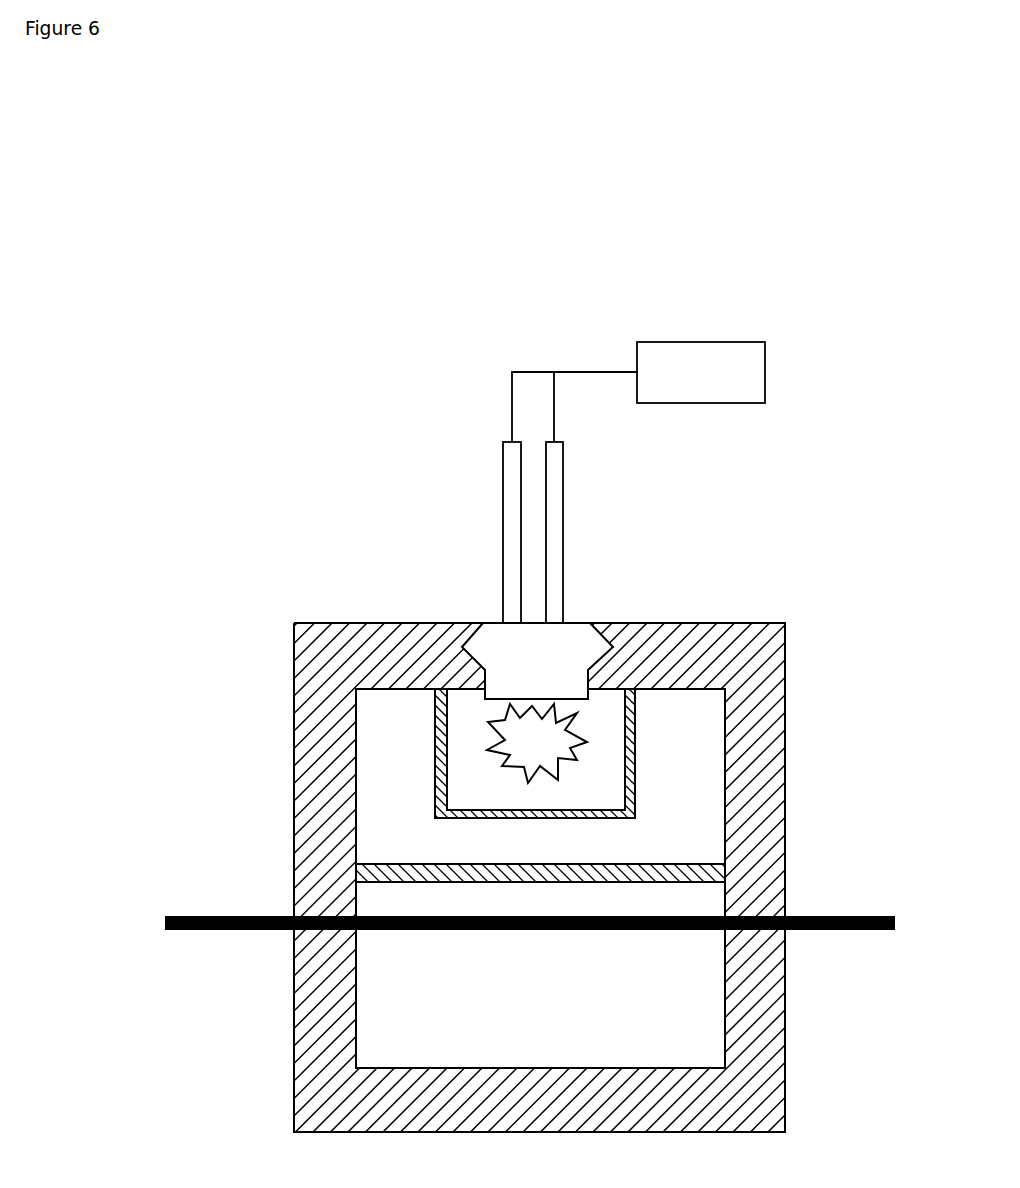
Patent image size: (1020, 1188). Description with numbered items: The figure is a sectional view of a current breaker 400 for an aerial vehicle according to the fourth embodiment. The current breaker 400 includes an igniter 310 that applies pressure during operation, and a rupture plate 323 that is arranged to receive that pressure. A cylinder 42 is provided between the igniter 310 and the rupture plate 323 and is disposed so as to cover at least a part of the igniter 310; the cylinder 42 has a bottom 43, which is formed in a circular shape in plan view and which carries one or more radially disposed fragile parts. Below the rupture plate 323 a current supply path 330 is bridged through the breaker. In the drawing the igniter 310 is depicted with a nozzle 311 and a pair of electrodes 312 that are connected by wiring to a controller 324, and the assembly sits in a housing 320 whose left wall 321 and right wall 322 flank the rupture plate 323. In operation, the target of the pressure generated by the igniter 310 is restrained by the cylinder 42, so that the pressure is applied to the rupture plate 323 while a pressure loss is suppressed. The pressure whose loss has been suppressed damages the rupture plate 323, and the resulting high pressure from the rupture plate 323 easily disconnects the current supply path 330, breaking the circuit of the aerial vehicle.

The current breaker for an aerial vehicle 400 is at (563, 192).
The controller 324 is at (683, 342).
The igniter 310 is at (587, 587).
The nozzle 311 is at (493, 632).
The electrodes 312 is at (512, 475).
The housing 320 is at (323, 647).
The left wall of housing 321 is at (312, 915).
The right wall of housing 322 is at (750, 912).
The rupture plate 323 is at (393, 864).
The cylinder 42 is at (652, 731).
The bottom 43 is at (590, 813).
The current supply path 330 is at (195, 931).